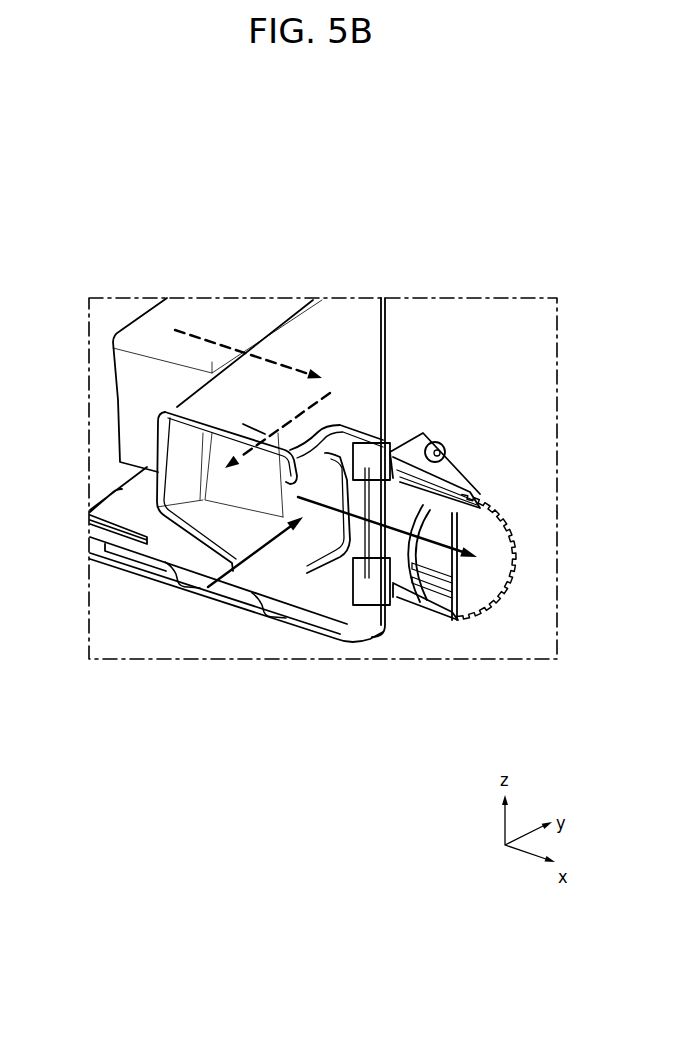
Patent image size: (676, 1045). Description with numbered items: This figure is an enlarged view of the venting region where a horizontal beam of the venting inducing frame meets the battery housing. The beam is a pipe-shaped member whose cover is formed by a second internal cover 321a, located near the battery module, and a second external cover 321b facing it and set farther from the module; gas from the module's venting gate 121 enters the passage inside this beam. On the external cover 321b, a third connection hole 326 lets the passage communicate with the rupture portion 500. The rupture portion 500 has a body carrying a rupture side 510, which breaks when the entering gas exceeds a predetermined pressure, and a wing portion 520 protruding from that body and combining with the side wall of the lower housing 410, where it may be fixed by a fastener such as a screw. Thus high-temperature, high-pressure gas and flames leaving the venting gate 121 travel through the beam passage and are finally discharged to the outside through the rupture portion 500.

The venting gate 121 is at (202, 322).
The second internal cover 321a is at (162, 462).
The second external cover 321b is at (333, 322).
The third connection hole 326 is at (321, 557).
The lower housing 410 is at (441, 335).
The rupture portion 500 is at (438, 639).
The rupture side 510 is at (363, 535).
The wing portion 520 is at (453, 463).